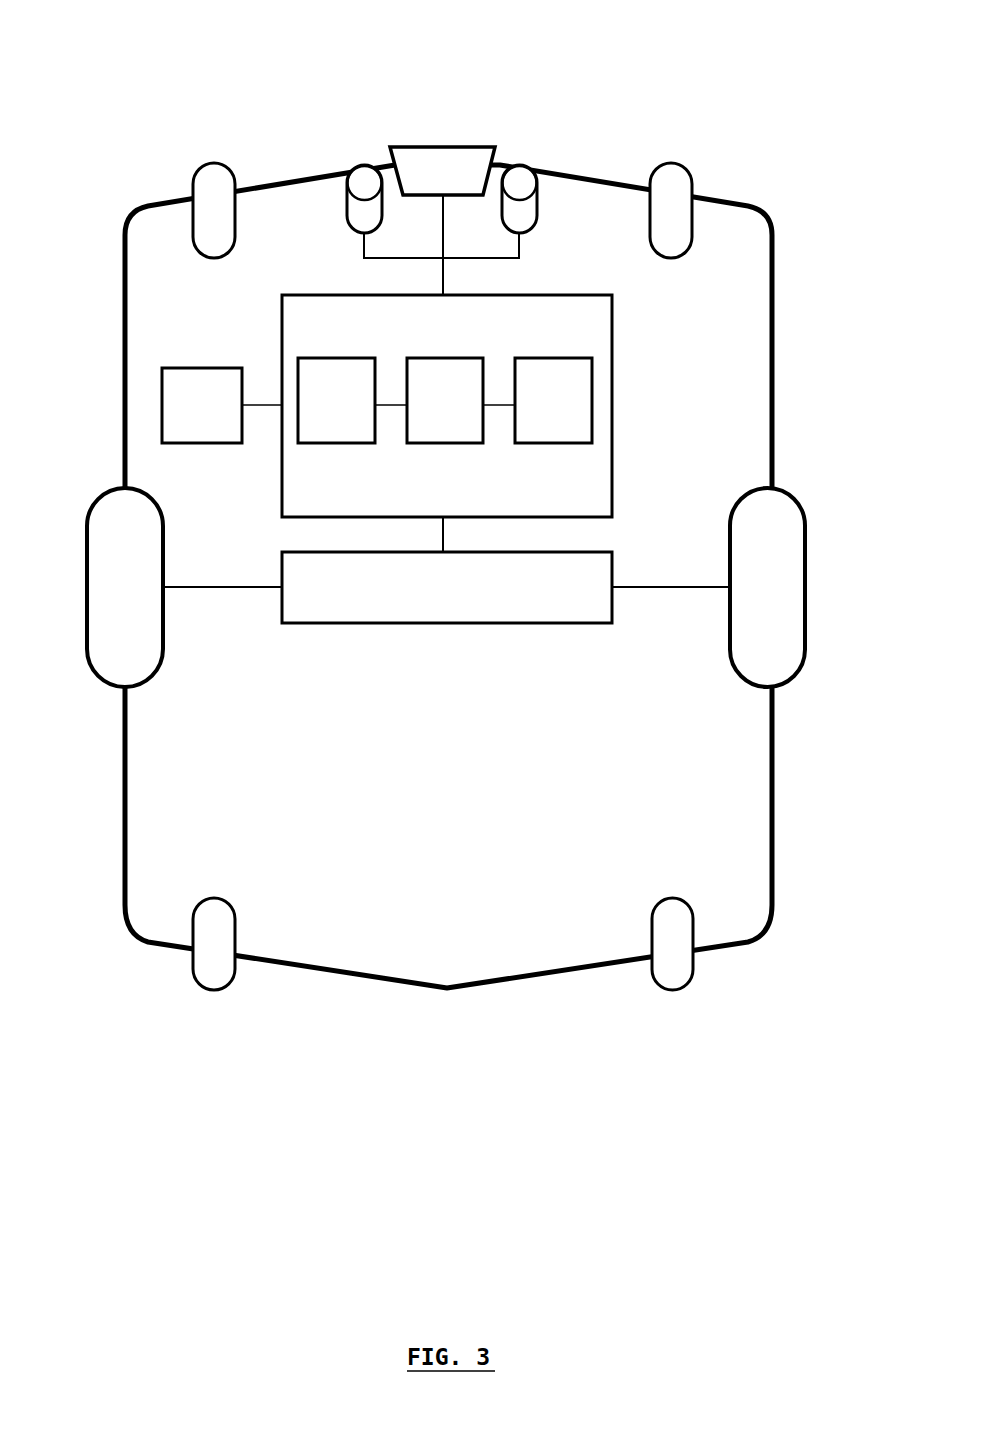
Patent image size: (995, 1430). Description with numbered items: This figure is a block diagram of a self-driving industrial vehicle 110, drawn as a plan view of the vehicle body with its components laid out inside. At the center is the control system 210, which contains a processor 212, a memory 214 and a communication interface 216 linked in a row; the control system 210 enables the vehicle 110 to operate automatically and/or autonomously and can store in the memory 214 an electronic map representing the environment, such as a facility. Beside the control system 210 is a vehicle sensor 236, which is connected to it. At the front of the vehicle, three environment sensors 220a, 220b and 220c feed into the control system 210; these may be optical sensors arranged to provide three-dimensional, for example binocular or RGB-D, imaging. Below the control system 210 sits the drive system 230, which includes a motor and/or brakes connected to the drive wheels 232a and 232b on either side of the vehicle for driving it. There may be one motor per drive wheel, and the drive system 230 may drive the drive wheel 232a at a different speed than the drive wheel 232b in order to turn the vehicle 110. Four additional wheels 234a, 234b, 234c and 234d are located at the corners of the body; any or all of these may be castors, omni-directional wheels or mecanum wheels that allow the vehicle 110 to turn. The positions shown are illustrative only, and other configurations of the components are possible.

The self-driving industrial vehicle 110 is at (121, 74).
The control system 210 is at (420, 342).
The processor 212 is at (422, 407).
The memory 214 is at (313, 407).
The communication interface 216 is at (530, 407).
The environment sensor 220a is at (420, 180).
The environment sensor 220b is at (348, 198).
The environment sensor 220c is at (537, 198).
The drive system 230 is at (424, 599).
The drive wheel 232a is at (87, 587).
The drive wheel 232b is at (805, 587).
The wheel 234a is at (193, 188).
The wheel 234b is at (692, 185).
The wheel 234c is at (193, 963).
The wheel 234d is at (693, 965).
The vehicle sensor 236 is at (179, 412).